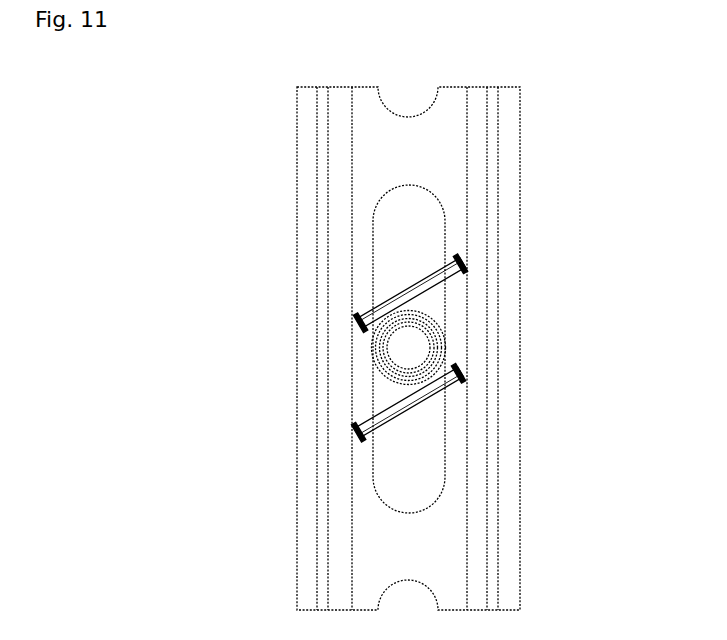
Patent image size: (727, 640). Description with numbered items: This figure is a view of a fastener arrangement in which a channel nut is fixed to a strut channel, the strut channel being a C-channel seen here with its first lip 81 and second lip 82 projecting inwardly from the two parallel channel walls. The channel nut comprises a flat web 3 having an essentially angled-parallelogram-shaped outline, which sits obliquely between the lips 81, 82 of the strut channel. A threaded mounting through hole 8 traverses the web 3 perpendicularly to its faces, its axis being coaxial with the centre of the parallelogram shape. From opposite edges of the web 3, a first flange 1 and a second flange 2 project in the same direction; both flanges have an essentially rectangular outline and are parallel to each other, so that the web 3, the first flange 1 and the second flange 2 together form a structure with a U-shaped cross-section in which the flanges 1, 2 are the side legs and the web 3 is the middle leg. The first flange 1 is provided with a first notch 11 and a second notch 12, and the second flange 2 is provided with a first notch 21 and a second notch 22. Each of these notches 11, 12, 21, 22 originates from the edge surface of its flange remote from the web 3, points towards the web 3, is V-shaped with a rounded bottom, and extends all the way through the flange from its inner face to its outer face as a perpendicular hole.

The first flange 1 is at (425, 398).
The first notch 11 is at (350, 435).
The second notch 12 is at (468, 375).
The second flange 2 is at (417, 287).
The first notch 21 is at (353, 325).
The second notch 22 is at (467, 263).
The web 3 is at (367, 387).
The mounting through hole 8 is at (418, 347).
The first lip 81 is at (322, 145).
The second lip 82 is at (498, 162).